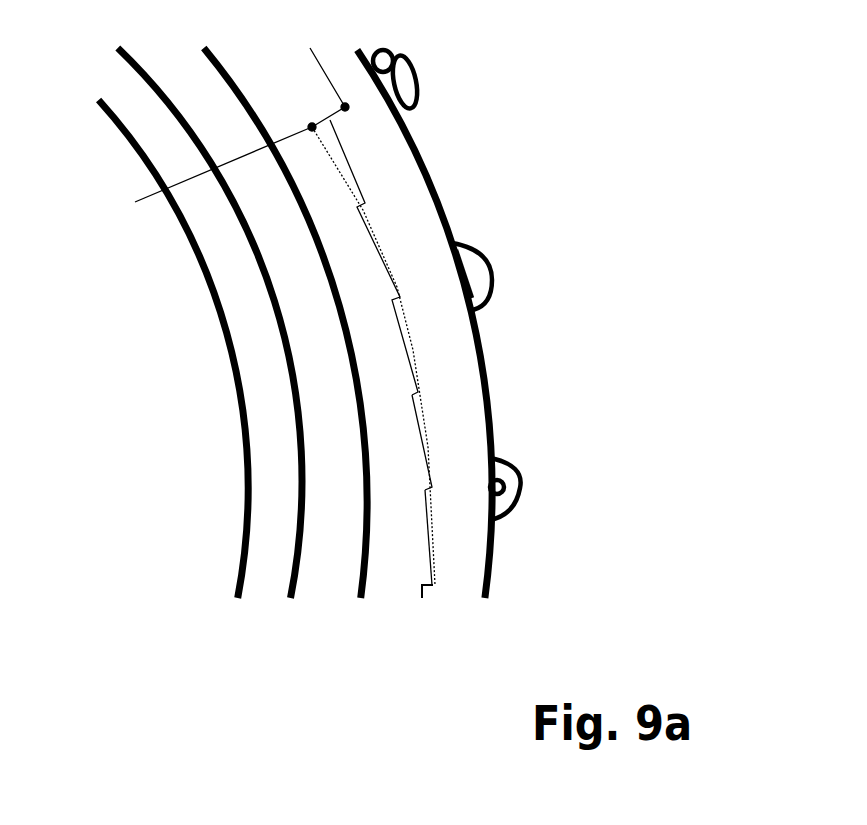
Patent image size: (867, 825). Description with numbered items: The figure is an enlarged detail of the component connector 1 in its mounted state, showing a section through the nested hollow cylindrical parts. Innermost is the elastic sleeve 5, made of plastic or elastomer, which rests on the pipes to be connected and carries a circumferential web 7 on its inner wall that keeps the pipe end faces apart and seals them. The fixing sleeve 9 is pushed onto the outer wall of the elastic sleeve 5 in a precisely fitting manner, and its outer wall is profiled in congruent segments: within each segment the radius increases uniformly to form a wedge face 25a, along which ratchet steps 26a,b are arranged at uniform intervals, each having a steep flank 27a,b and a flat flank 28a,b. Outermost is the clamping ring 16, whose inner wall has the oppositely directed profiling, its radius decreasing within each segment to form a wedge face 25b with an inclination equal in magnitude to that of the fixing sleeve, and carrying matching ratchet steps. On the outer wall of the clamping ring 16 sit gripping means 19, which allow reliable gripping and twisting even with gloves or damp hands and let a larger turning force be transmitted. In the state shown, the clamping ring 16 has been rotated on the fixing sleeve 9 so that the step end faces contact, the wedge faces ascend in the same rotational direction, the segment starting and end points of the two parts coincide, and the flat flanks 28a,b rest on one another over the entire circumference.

The component connector 1 is at (164, 358).
The elastic sleeve 5 is at (330, 573).
The circumferential web 7 is at (265, 520).
The fixing sleeve 9 is at (388, 570).
The clamping ring 16 is at (460, 558).
The gripping means 19 is at (407, 83).
The wedge face 25a is at (437, 590).
The wedge face 25b is at (435, 528).
The ratchet steps 26a,b is at (408, 352).
The steep flanks 27a,b is at (413, 397).
The flat flanks 28a,b is at (428, 447).